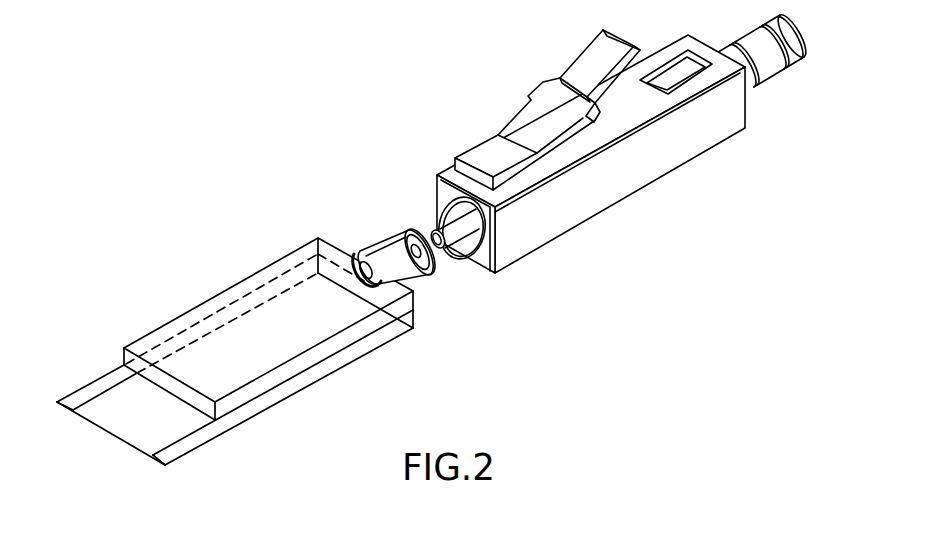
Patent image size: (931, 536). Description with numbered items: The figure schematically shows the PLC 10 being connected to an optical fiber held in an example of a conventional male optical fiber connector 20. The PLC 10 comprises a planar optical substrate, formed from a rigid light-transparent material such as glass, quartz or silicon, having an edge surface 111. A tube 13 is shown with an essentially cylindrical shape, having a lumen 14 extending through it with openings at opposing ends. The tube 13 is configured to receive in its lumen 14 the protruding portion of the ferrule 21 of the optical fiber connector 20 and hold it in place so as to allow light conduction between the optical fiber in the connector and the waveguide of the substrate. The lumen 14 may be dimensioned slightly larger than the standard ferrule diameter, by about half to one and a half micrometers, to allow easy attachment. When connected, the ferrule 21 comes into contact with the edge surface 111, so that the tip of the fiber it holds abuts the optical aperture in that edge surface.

The PLC 10 is at (280, 351).
The edge surface 111 is at (414, 315).
The tube 13 is at (362, 250).
The lumen 14 is at (412, 227).
The optical fiber connector 20 is at (638, 178).
The ferrule 21 is at (458, 232).